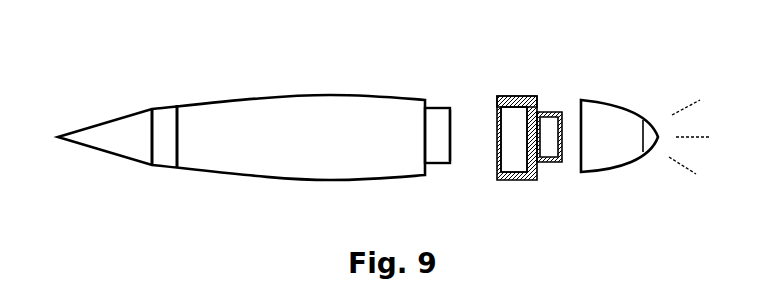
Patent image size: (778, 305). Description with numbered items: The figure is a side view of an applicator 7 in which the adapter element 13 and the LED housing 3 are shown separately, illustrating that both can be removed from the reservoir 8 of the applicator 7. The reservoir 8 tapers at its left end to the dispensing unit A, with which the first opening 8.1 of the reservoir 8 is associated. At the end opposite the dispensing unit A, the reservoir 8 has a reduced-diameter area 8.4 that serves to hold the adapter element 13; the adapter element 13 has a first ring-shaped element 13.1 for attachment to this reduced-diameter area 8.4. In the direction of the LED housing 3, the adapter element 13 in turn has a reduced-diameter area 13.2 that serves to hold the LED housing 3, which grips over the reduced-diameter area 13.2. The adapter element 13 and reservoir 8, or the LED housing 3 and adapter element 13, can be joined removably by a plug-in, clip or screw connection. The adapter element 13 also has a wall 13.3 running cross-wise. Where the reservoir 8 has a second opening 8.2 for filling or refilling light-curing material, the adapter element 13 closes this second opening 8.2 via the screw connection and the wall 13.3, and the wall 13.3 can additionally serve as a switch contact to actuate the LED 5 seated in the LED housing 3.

The dispensing unit A is at (105, 46).
The applicator 7 is at (308, 76).
The reservoir 8 is at (355, 115).
The first opening 8.1 is at (175, 134).
The second opening 8.2 is at (452, 125).
The reduced-diameter area 8.4 is at (432, 120).
The adapter element 13 is at (532, 98).
The first ring-shaped element 13.1 is at (508, 95).
The reduced-diameter area 13.2 is at (548, 117).
The wall 13.3 is at (523, 138).
The LED housing 3 is at (623, 108).
The LED 5 is at (652, 123).